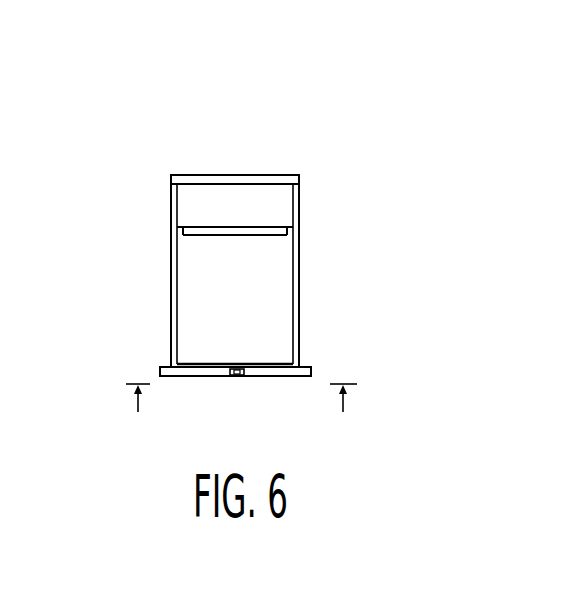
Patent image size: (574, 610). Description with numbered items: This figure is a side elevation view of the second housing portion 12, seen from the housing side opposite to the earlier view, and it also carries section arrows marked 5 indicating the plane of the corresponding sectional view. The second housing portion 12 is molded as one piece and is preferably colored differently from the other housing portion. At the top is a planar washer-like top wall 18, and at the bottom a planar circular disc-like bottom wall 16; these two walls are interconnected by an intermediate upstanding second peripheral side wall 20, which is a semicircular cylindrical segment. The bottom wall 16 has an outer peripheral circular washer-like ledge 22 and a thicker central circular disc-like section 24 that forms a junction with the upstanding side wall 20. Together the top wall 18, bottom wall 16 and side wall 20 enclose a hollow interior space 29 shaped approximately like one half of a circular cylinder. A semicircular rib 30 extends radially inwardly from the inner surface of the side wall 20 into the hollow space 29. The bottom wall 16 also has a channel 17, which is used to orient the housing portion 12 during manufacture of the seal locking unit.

The second housing portion 12 is at (289, 157).
The top wall 18 is at (226, 175).
The second peripheral side wall 20 is at (302, 250).
The ledge 22 is at (165, 364).
The semicircular rib 30 is at (210, 226).
The hollow interior space 29 is at (247, 298).
The central circular disc-like section 24 is at (254, 362).
The bottom wall 16 is at (272, 378).
The channel 17 is at (236, 377).
The section line 5 is at (241, 401).